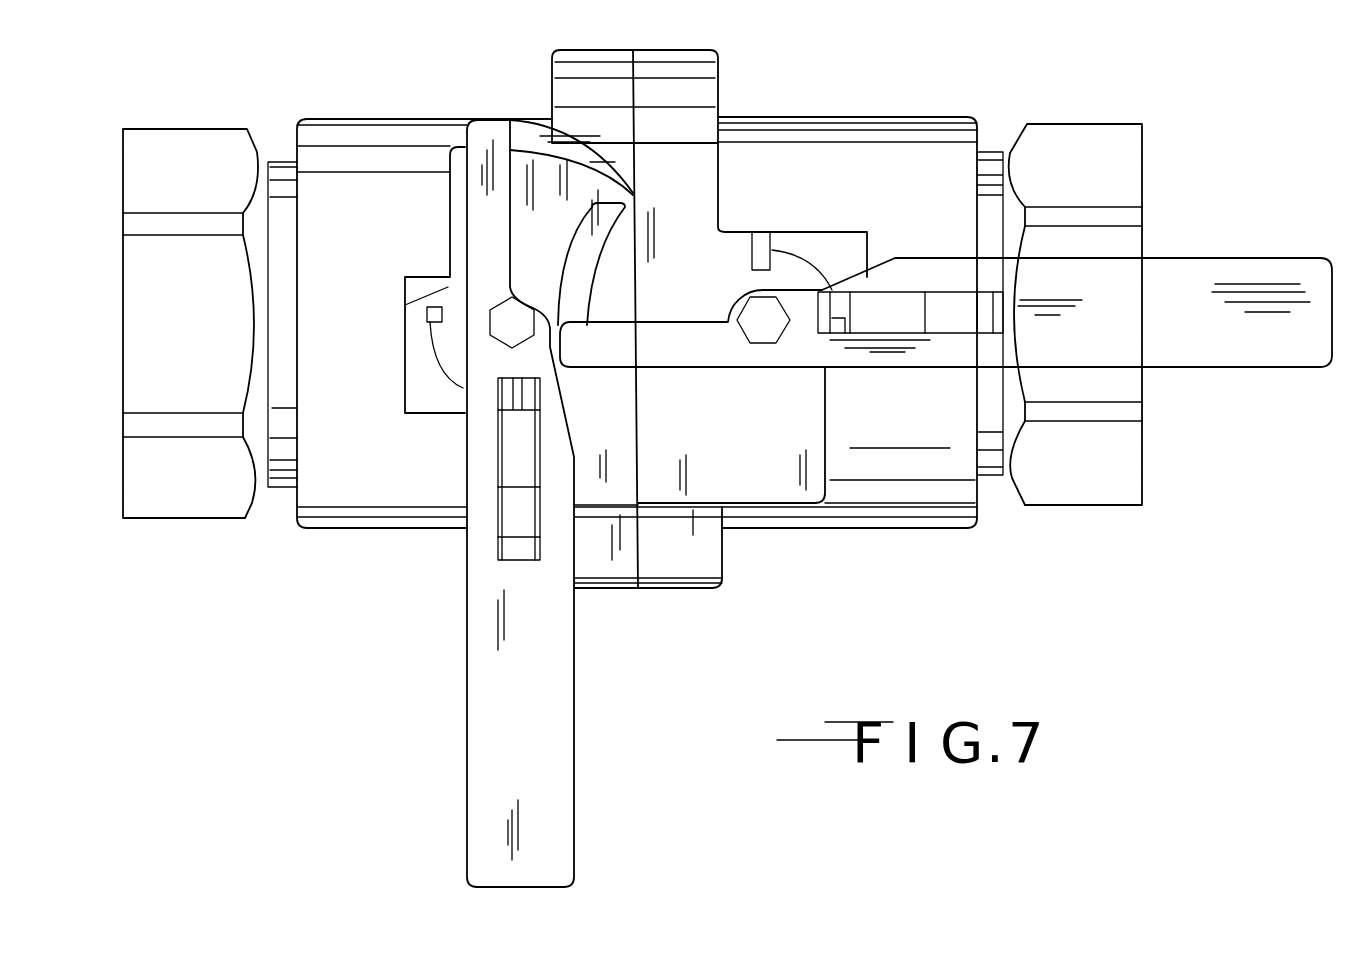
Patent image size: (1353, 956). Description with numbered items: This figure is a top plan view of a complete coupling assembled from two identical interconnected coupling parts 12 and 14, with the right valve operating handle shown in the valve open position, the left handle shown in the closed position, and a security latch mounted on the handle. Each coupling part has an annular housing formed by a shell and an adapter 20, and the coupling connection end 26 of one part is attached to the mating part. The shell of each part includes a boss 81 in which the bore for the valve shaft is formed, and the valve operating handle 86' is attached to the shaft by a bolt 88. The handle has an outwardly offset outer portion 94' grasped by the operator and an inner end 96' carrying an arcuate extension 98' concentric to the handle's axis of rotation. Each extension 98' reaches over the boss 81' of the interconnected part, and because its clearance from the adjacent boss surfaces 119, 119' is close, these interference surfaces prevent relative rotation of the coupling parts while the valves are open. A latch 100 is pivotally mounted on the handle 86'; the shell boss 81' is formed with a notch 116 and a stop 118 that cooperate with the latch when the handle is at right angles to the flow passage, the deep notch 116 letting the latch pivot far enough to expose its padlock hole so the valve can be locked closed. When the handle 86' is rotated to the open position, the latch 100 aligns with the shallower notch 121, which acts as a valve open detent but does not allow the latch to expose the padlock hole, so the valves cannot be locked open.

The coupling part 12 is at (919, 543).
The coupling part 14 is at (378, 567).
The adapter 20 is at (177, 520).
The coupling connection end 26 is at (636, 548).
The boss 81 is at (637, 366).
The shell boss 81' is at (624, 575).
The valve operating handle 86' is at (882, 500).
The bolt 88 is at (760, 333).
The handle outer portion 94' is at (899, 503).
The handle inner end 96' is at (575, 347).
The arcuate extension 98' is at (587, 179).
The latch 100 is at (518, 513).
The notch 116 is at (770, 252).
The stop 118 is at (748, 250).
The boss surface 119 is at (731, 435).
The boss surface 119' is at (605, 450).
The notch 121 is at (432, 312).